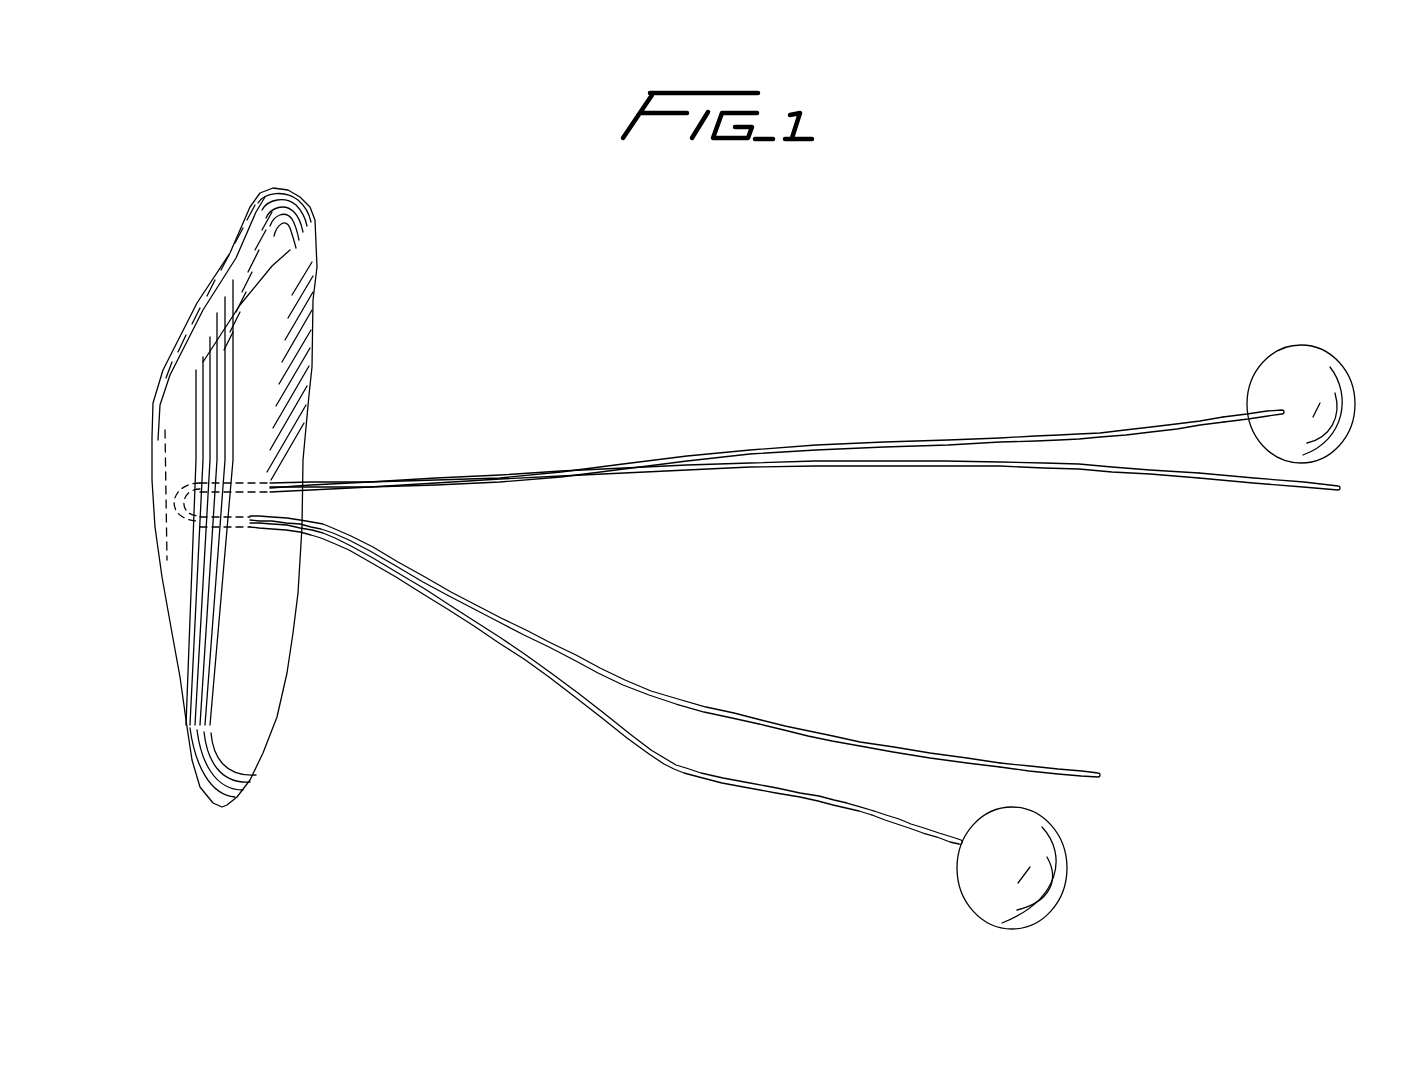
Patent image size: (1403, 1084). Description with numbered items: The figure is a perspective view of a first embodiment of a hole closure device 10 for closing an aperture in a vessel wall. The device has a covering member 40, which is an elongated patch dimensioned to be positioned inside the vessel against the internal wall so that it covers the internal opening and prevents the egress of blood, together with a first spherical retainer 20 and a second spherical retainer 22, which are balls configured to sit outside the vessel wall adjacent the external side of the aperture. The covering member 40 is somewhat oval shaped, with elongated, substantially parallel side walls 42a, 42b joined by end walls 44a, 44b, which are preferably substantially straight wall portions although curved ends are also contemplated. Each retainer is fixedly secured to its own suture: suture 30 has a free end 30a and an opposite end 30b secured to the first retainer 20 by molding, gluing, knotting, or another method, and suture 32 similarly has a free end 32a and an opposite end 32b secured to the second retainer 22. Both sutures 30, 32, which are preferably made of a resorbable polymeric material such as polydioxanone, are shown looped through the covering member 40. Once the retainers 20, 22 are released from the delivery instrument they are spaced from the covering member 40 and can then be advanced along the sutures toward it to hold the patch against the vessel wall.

The hole closure device 10 is at (752, 309).
The first spherical retainer 20 is at (1302, 362).
The second spherical retainer 22 is at (1042, 875).
The suture 30 is at (1050, 434).
The free end of suture 30a is at (1338, 495).
The opposite end of suture 30b is at (1280, 410).
The suture 32 is at (826, 736).
The free end of suture 32a is at (1085, 770).
The opposite end of suture 32b is at (958, 842).
The covering member 40 is at (285, 300).
The side wall 42a is at (313, 372).
The side wall 42b is at (208, 437).
The end wall 44a is at (282, 190).
The end wall 44b is at (222, 808).